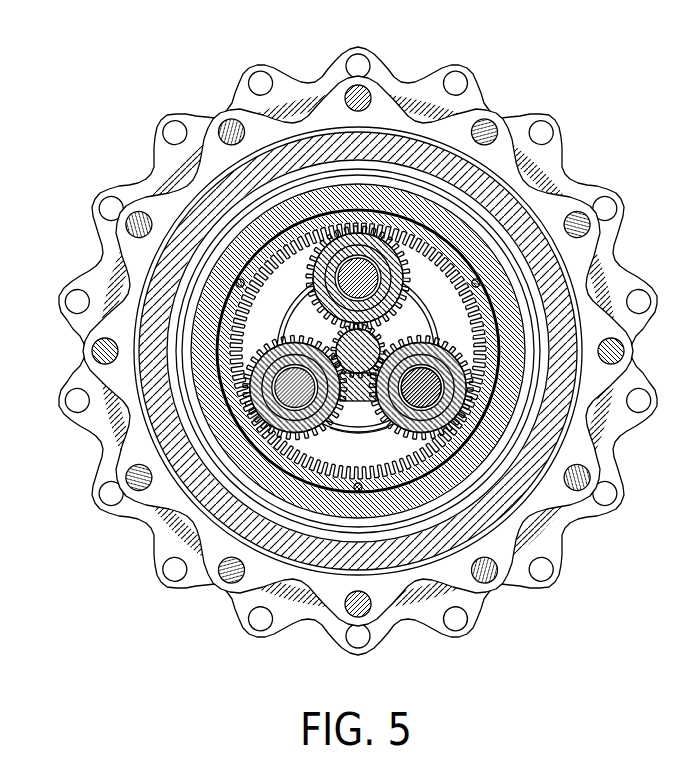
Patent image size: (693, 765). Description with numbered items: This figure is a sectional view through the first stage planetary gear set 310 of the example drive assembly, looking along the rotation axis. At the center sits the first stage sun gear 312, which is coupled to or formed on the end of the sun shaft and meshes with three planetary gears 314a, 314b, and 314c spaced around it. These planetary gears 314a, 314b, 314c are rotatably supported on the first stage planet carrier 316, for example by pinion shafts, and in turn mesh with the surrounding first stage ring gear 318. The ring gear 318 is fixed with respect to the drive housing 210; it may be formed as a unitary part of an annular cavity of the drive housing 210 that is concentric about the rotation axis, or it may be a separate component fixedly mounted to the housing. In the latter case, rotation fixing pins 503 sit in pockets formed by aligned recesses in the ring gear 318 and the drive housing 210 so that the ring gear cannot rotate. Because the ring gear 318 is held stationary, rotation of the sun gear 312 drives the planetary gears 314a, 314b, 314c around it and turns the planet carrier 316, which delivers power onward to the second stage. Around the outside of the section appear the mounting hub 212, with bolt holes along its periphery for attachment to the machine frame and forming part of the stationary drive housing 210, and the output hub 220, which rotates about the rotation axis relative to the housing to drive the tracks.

The first stage planetary gear set 310 is at (371, 349).
The mounting hub 212 is at (556, 136).
The output hub 220 is at (573, 198).
The rotation fixing pin 503 is at (240, 280).
The drive housing 210 is at (290, 477).
The first stage ring gear 318 is at (392, 477).
The first stage sun gear 312 is at (340, 337).
The planetary gear 314a is at (452, 427).
The planetary gear 314b is at (370, 240).
The planetary gear 314c is at (260, 418).
The first stage planet carrier 316 is at (423, 390).